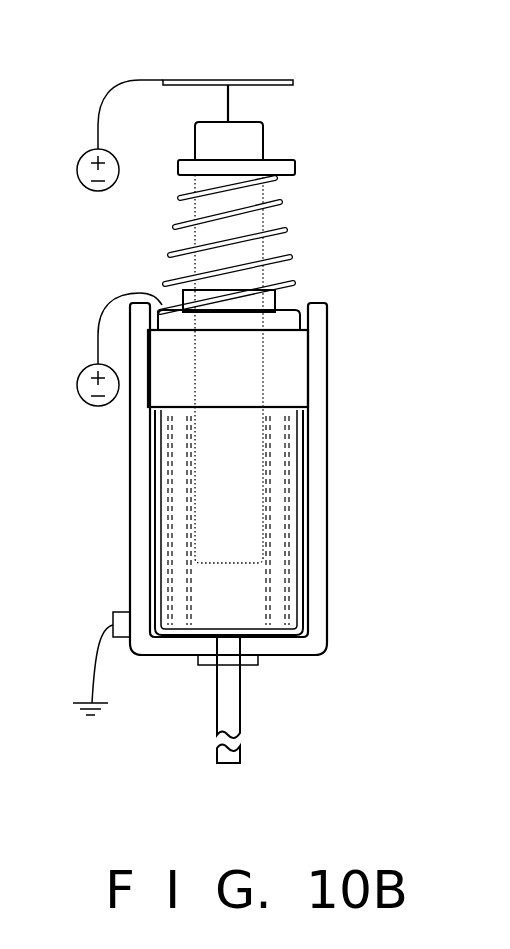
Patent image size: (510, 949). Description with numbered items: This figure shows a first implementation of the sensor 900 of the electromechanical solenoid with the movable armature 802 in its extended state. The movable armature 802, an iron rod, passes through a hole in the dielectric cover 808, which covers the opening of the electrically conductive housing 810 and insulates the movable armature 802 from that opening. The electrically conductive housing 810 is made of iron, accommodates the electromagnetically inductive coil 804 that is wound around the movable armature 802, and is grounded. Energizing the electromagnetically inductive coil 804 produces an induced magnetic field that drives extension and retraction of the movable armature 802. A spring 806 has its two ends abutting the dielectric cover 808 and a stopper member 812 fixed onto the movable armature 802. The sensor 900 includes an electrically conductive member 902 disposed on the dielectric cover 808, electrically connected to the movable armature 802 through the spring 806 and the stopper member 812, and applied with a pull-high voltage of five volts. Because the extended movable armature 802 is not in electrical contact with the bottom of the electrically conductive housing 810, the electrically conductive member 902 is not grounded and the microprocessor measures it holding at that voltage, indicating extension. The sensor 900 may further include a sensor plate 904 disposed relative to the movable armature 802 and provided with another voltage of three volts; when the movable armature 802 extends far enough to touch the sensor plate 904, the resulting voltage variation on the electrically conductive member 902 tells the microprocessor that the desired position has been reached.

The movable armature 802 is at (245, 148).
The electromagnetically inductive coil 804 is at (293, 482).
The spring 806 is at (173, 257).
The dielectric cover 808 is at (280, 378).
The electrically conductive housing 810 is at (310, 595).
The stopper member 812 is at (180, 168).
The sensor 900 is at (329, 246).
The electrically conductive member 902 is at (293, 322).
The sensor plate 904 is at (234, 68).